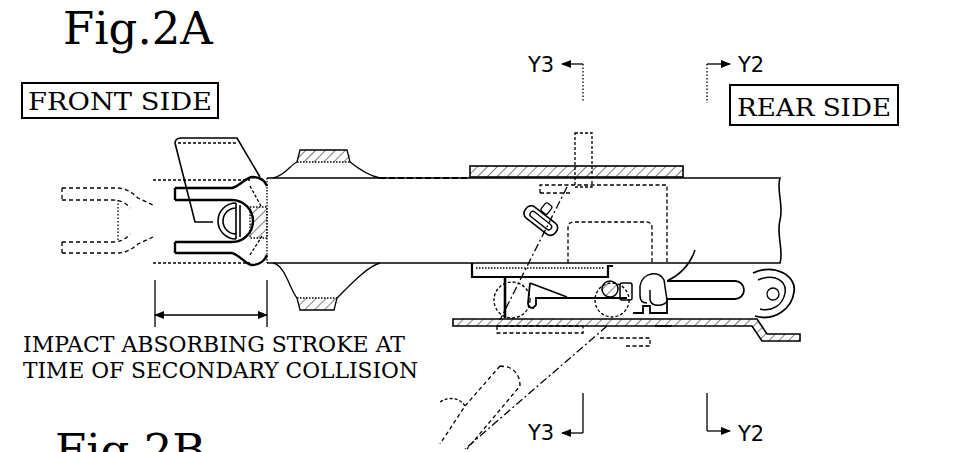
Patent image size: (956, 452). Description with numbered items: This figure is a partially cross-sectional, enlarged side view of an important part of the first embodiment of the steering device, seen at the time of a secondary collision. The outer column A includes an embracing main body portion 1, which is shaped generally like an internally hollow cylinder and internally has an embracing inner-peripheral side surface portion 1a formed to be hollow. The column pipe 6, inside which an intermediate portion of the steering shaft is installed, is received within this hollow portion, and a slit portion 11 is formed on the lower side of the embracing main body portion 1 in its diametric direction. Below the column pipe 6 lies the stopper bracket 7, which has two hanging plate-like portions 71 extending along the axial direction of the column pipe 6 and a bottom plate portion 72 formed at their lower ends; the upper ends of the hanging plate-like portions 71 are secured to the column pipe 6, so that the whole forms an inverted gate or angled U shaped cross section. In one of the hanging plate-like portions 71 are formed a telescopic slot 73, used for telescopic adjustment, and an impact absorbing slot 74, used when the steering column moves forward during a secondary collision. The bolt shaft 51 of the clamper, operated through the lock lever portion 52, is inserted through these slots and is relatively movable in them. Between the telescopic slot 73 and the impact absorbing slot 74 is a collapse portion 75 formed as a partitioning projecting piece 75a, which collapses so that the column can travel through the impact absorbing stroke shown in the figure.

The embracing main body portion 1 is at (666, 164).
The embracing inner-peripheral side surface portion 1a is at (492, 179).
The column pipe 6 is at (431, 178).
The stopper bracket 7 is at (690, 328).
The slit portion 11 is at (487, 273).
The bolt shaft 51 is at (613, 281).
The lock lever portion 52 is at (463, 407).
The hanging plate-like portions 71 is at (755, 291).
The bottom plate portion 72 is at (663, 327).
The telescopic slot 73 is at (572, 291).
The impact absorbing slot 74 is at (712, 288).
The collapse portion 75 is at (668, 283).
The partitioning projecting piece 75a is at (698, 251).
The outer column A is at (626, 164).